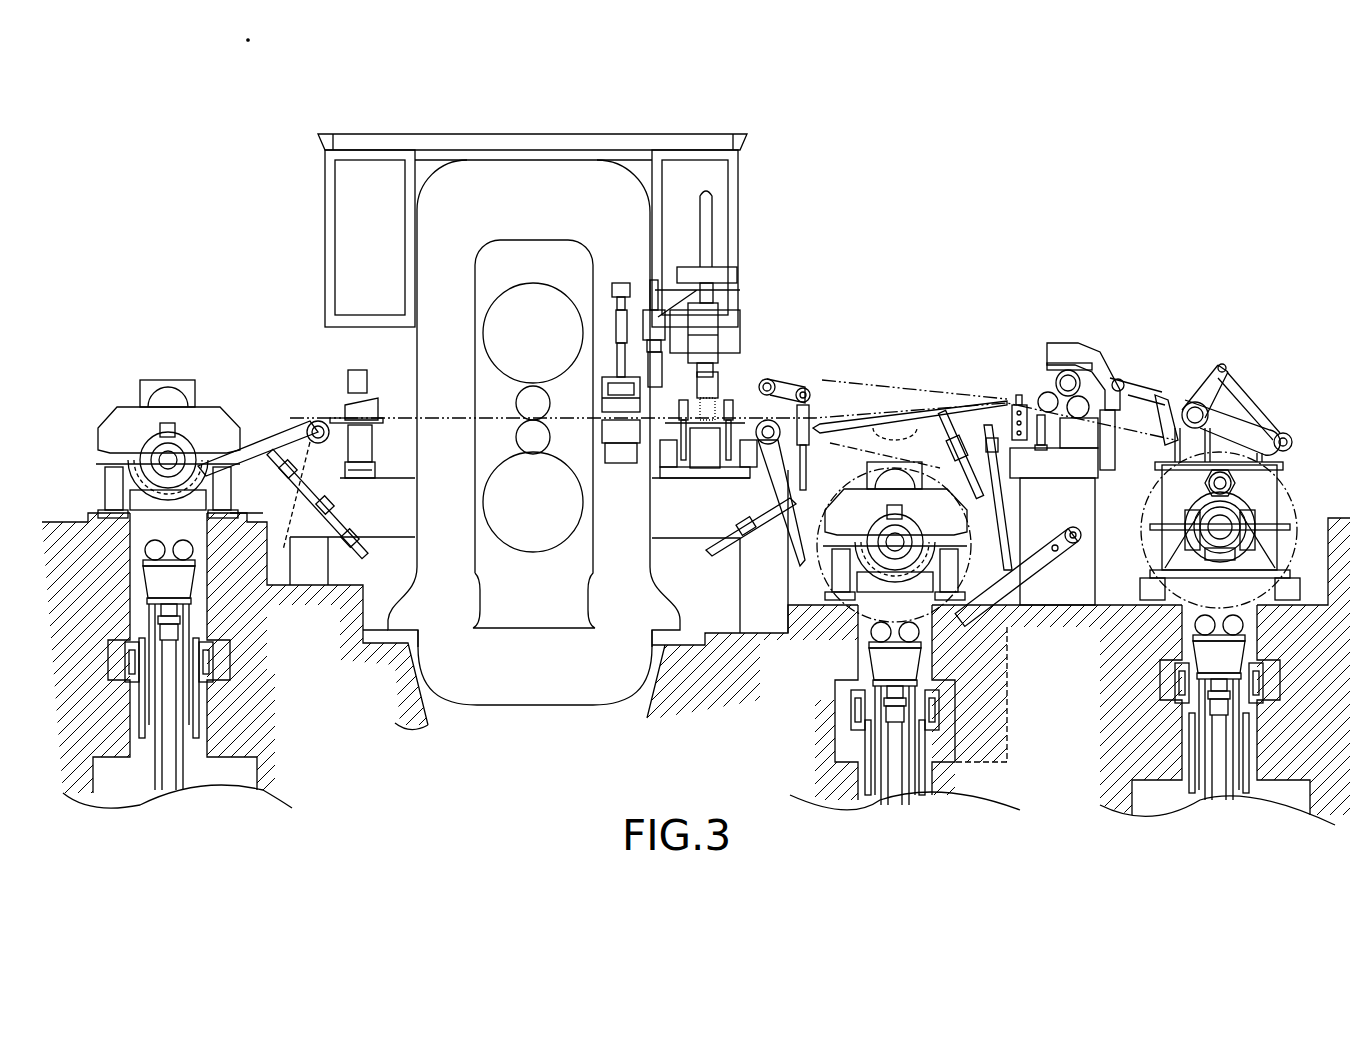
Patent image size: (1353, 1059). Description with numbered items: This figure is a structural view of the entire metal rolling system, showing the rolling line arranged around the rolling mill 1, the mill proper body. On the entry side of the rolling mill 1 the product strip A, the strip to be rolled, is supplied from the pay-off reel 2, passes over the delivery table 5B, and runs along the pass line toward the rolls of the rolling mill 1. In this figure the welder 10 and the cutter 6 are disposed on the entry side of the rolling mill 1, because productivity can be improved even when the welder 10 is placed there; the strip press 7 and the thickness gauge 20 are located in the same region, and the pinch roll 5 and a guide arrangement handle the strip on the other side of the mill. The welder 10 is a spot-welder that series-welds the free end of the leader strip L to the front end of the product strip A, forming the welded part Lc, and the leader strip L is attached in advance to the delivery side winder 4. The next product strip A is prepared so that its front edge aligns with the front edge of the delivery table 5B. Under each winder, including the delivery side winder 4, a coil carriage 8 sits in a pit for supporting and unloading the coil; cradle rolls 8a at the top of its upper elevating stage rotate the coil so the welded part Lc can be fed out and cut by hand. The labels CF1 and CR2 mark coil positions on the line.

The rolling mill 1 is at (440, 165).
The pay-off reel 2 is at (1257, 497).
The delivery side winder 4 is at (130, 392).
The pinch roll 5 is at (1090, 335).
The delivery table 5B is at (910, 433).
The cutter 6 is at (640, 303).
The strip press 7 is at (612, 352).
The coil carriage 8 is at (135, 572).
The cradle rolls 8a is at (868, 628).
The welder 10 is at (732, 305).
The thickness gauge 20 is at (338, 380).
The product strip A is at (830, 422).
The leader strip L is at (433, 417).
The welded part Lc is at (843, 449).
The front coil position CF1 is at (868, 625).
The rear coil position CR2 is at (1123, 565).